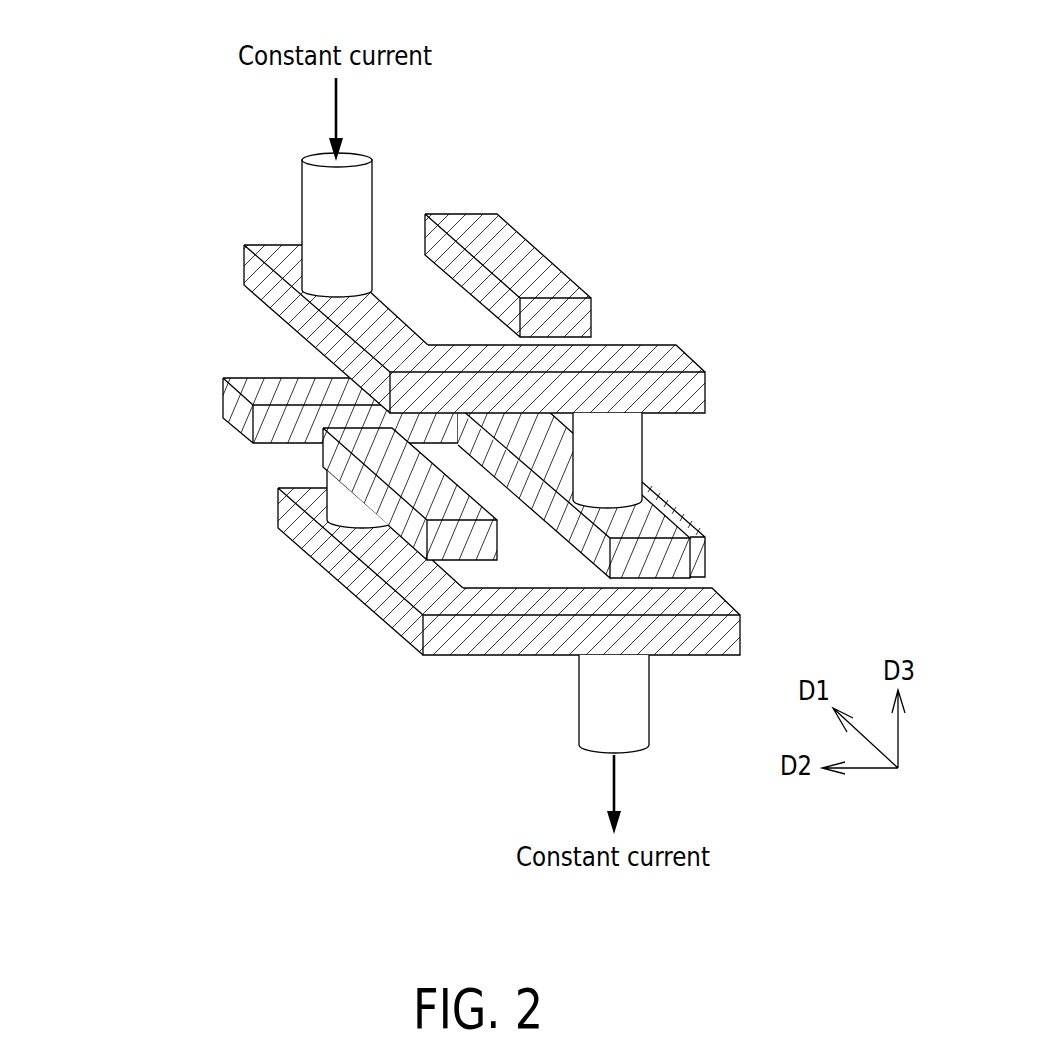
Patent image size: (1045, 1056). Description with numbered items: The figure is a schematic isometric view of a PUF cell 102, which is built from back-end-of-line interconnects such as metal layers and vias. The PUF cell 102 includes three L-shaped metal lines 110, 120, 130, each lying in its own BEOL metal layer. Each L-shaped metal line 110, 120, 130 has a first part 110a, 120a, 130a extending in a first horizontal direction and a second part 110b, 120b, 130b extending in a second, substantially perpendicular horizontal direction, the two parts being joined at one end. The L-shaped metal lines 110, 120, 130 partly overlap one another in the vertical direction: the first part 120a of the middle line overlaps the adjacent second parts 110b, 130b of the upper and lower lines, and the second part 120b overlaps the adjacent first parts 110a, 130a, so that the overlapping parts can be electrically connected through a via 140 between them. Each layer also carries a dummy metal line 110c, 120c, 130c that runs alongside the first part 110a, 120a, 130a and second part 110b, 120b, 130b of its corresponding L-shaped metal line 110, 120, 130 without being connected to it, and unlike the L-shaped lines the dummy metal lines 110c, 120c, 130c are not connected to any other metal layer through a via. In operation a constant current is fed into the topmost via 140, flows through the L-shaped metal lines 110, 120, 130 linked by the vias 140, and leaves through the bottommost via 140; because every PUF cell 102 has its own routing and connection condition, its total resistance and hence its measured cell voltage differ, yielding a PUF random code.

The PUF cell 102 is at (700, 132).
The L-shaped metal line 110 is at (381, 312).
The first part 110a is at (273, 290).
The second part 110b is at (433, 392).
The dummy metal line 110c is at (532, 260).
The L-shaped metal line 120 is at (434, 564).
The first part 120a is at (291, 429).
The second part 120b is at (507, 475).
The dummy metal line 120c is at (483, 542).
The L-shaped metal line 130 is at (438, 582).
The first part 130a is at (358, 575).
The second part 130b is at (500, 645).
The dummy metal line 130c is at (688, 525).
The via 140 is at (318, 208).